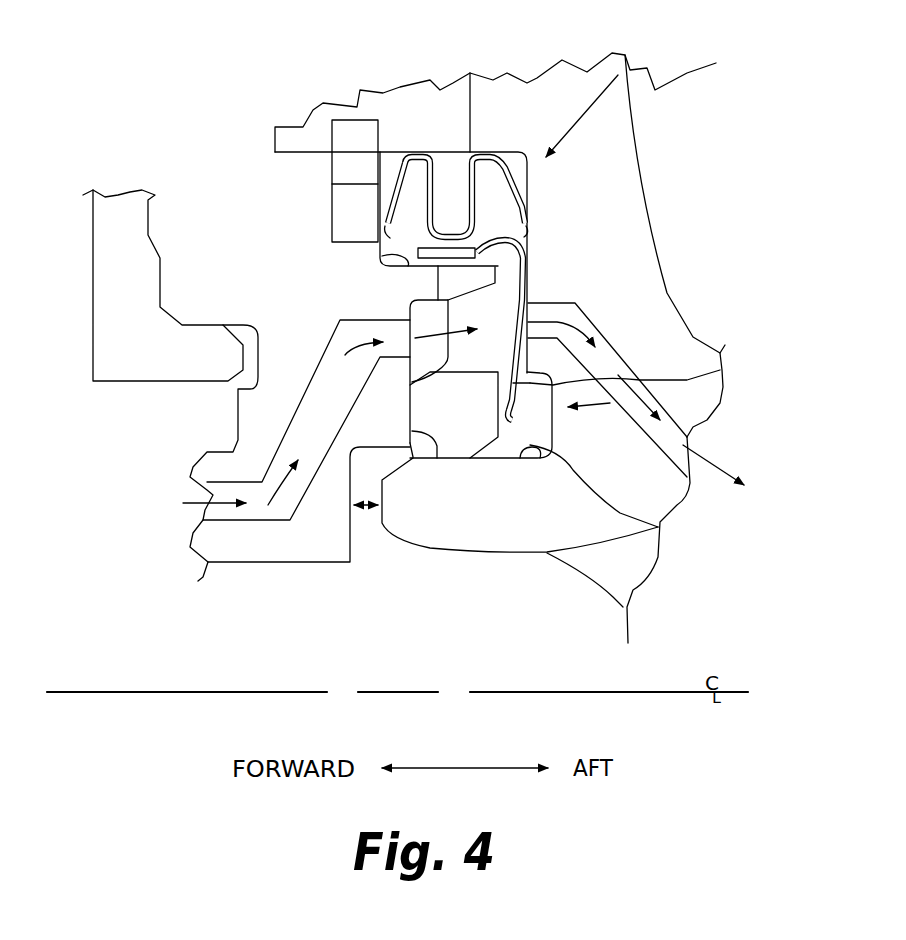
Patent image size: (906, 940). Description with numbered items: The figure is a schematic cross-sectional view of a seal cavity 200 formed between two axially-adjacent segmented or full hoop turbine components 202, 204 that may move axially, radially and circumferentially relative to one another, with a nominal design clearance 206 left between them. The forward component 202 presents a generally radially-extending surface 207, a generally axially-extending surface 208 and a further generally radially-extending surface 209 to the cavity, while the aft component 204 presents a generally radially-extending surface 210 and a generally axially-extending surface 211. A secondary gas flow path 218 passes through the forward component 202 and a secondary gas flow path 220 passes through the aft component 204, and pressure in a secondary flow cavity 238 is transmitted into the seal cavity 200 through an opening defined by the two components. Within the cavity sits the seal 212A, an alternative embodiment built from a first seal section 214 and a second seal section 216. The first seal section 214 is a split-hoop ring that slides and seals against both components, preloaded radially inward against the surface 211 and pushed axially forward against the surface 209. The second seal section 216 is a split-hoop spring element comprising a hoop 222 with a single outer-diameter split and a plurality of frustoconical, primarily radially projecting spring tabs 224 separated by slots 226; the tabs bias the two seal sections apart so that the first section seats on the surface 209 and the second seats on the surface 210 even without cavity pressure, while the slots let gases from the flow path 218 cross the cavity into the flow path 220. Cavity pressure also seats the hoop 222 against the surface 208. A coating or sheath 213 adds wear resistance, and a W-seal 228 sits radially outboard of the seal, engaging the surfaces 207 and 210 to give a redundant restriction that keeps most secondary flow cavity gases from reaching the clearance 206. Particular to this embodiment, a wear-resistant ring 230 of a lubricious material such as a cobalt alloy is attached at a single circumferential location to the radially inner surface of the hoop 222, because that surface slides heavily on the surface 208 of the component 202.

The secondary flow cavity 238 is at (208, 51).
The seal cavity 200 is at (518, 245).
The turbine component 202 is at (273, 562).
The turbine component 204 is at (503, 552).
The nominal design clearance 206 is at (365, 510).
The generally-radially-extending surface 207 is at (378, 243).
The generally axially-extending surface 208 is at (380, 258).
The generally-radially-extending surface 209 is at (433, 460).
The generally radially-extending surface 210 is at (533, 233).
The generally axially-extending surface 211 is at (660, 527).
The seal 212A is at (720, 370).
The sheath 213 is at (535, 298).
The first seal section 214 is at (476, 417).
The second seal section 216 is at (534, 266).
The secondary gas flow path 218 is at (208, 503).
The secondary gas flow path 220 is at (687, 437).
The hoop 222 is at (528, 240).
The spring tabs 224 is at (647, 335).
The slots 226 is at (535, 282).
The W-seal 228 is at (527, 200).
The wear-resistant ring 230 is at (530, 247).